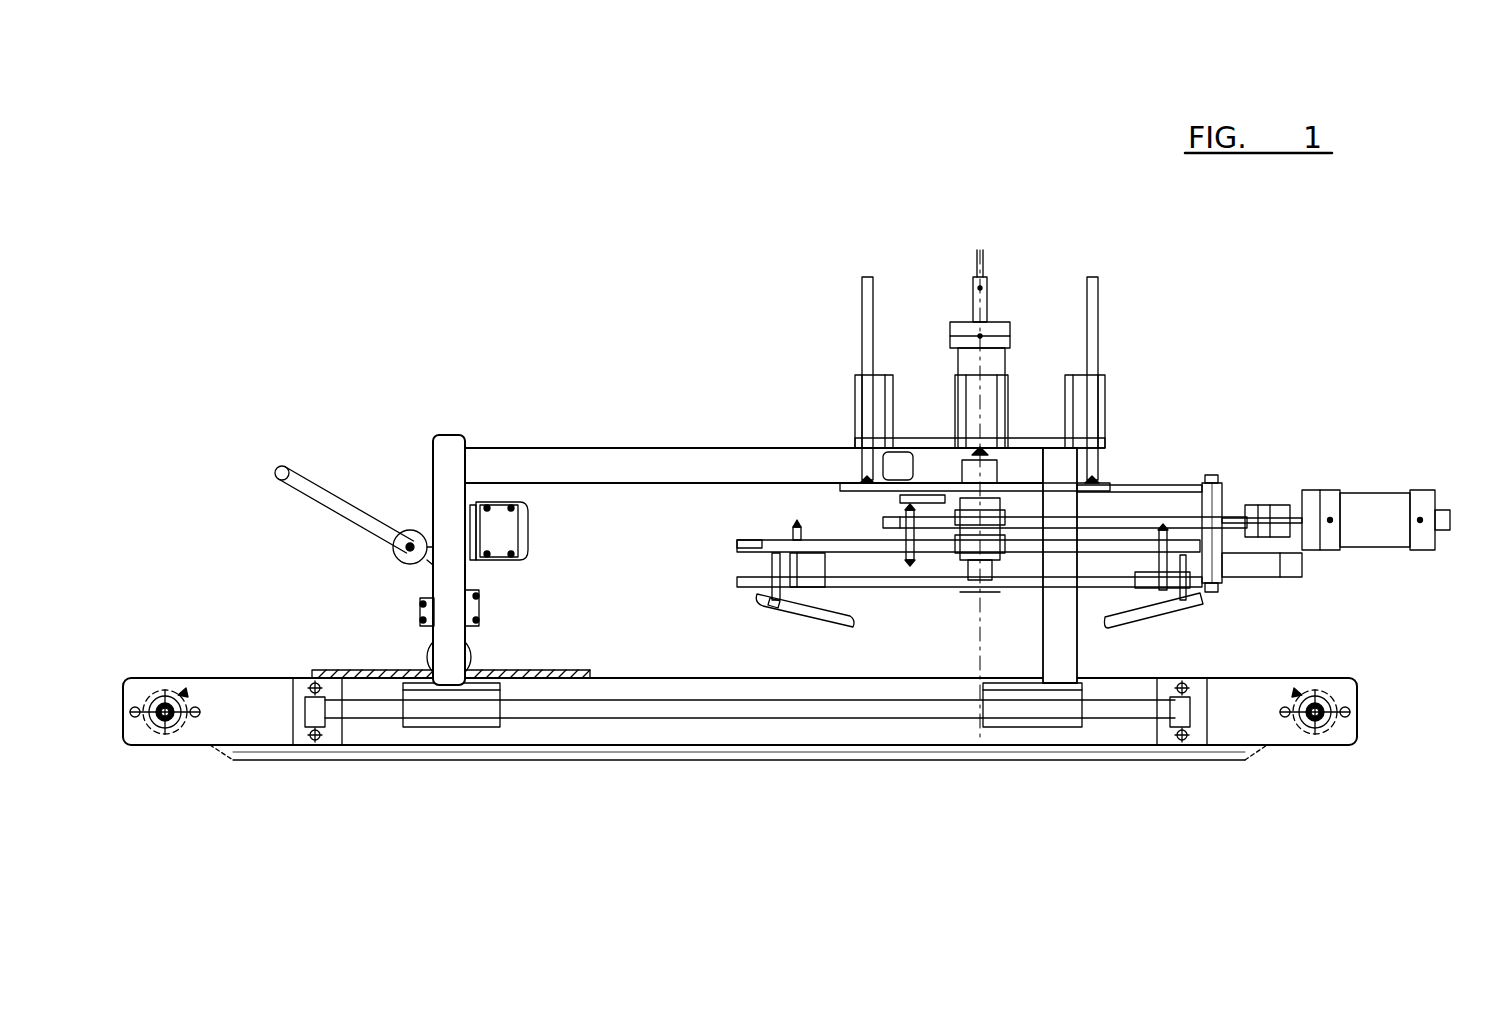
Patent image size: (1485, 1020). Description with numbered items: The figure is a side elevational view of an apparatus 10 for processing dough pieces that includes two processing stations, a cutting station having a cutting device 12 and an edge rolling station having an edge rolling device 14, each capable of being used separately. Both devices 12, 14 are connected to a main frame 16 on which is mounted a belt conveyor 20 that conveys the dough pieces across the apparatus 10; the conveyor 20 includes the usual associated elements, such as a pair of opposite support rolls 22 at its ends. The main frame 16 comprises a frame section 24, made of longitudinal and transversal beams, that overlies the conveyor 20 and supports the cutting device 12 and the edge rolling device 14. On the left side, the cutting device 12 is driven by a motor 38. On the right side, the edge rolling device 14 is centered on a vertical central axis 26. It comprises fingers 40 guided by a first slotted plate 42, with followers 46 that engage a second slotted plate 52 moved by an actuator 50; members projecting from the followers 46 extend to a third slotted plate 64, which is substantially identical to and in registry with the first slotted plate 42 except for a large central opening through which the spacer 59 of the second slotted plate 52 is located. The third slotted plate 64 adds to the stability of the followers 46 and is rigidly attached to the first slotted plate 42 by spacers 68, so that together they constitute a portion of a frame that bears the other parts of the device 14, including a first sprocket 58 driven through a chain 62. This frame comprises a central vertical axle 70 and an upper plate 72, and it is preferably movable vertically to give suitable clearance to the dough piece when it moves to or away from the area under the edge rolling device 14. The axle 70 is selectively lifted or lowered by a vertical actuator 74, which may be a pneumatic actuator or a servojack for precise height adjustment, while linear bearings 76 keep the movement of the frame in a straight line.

The apparatus 10 is at (272, 192).
The cutting device 12 is at (528, 596).
The edge rolling device 14 is at (1225, 428).
The main frame 16 is at (714, 436).
The belt conveyor 20 is at (215, 680).
The support rolls 22 is at (175, 735).
The frame section 24 is at (790, 455).
The vertical central axis 26 is at (988, 670).
The motor 38 is at (497, 512).
The fingers 40 is at (783, 606).
The first slotted plate 42 is at (895, 590).
The followers 46 is at (770, 578).
The actuator 50 is at (1420, 495).
The second slotted plate 52 is at (838, 547).
The first sprocket 58 is at (940, 485).
The spacer 59 is at (885, 523).
The chain 62 is at (1170, 522).
The third slotted plate 64 is at (740, 538).
The spacers 68 is at (1212, 505).
The vertical axle 70 is at (975, 585).
The upper plate 72 is at (1138, 487).
The vertical actuator 74 is at (967, 328).
The linear bearings 76 is at (860, 393).